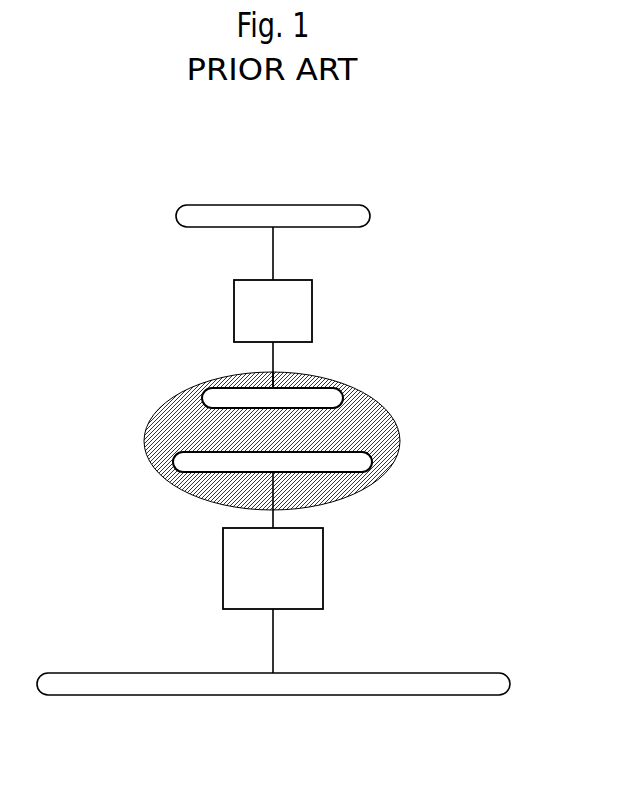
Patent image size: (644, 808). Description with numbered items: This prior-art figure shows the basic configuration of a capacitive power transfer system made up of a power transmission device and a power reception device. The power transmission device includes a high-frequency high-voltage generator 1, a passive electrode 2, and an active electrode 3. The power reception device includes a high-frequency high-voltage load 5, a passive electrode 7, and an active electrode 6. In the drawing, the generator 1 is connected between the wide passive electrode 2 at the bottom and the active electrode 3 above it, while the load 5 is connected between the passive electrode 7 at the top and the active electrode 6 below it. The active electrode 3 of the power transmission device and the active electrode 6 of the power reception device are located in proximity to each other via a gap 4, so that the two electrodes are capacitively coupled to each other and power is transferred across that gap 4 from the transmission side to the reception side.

The high-frequency high-voltage generator 1 is at (323, 567).
The passive electrode 2 is at (440, 673).
The active electrode 3 is at (355, 463).
The gap 4 is at (380, 433).
The high-frequency high-voltage load 5 is at (312, 308).
The active electrode 6 is at (337, 402).
The passive electrode 7 is at (337, 205).